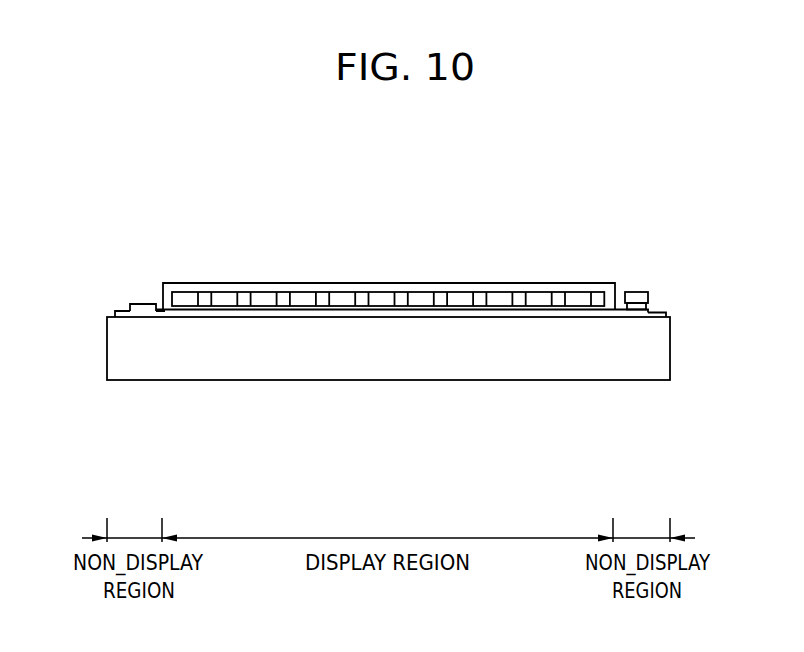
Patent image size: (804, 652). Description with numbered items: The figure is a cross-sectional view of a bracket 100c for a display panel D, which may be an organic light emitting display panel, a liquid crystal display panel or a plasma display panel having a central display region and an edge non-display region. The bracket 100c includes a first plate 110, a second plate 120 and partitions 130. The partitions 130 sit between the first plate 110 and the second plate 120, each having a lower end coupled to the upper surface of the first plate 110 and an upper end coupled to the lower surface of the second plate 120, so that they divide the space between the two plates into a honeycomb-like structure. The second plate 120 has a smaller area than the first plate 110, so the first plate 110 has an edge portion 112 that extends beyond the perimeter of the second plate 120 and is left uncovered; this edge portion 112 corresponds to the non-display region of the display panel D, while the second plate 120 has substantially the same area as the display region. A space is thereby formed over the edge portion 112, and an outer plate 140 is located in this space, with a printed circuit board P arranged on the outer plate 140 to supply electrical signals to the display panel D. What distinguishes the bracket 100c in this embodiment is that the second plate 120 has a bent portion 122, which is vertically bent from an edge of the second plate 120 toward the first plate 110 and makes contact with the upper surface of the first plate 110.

The bracket 100c is at (420, 173).
The display panel D is at (108, 353).
The first plate 110 is at (388, 313).
The edge portion 112 is at (150, 311).
The second plate 120 is at (387, 283).
The bent portion 122 is at (156, 302).
The partitions 130 is at (240, 303).
The outer plate 140 is at (663, 317).
The printed circuit board P is at (633, 292).